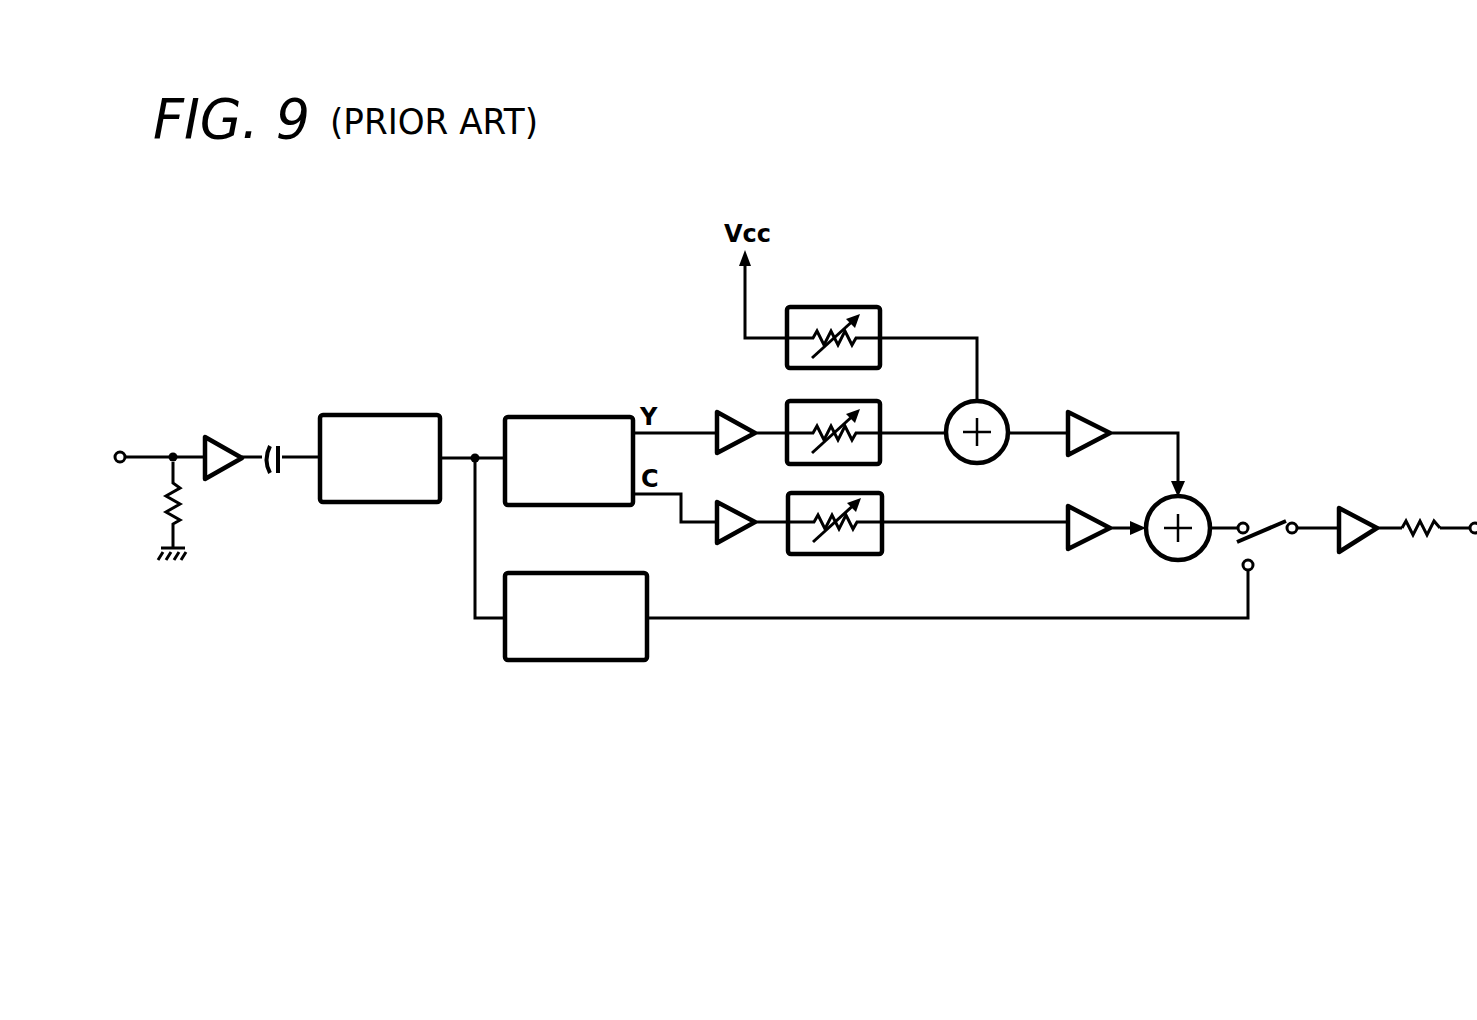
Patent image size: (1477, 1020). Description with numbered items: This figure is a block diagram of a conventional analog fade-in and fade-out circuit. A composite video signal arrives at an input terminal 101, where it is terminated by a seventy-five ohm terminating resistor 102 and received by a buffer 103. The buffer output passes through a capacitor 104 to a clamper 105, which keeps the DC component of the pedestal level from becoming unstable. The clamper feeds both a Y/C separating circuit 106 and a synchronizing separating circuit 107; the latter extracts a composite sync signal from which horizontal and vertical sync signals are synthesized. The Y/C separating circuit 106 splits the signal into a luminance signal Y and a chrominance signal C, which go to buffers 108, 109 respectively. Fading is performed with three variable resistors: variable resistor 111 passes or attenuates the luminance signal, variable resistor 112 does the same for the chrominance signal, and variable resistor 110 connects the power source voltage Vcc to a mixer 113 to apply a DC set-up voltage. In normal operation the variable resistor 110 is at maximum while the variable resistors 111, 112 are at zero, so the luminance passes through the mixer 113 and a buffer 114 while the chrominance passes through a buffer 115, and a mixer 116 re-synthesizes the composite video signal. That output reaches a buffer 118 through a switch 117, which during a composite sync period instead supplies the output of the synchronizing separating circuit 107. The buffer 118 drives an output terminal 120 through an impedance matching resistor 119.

The input terminal 101 is at (120, 450).
The terminating resistor 102 is at (168, 506).
The buffer 103 is at (215, 440).
The capacitor 104 is at (273, 478).
The clamper 105 is at (383, 415).
The Y/C separating circuit 106 is at (567, 417).
The synchronizing separating circuit 107 is at (573, 661).
The buffer 108 is at (726, 412).
The buffer 109 is at (731, 545).
The variable resistor 110 is at (836, 307).
The variable resistor 111 is at (878, 400).
The variable resistor 112 is at (838, 556).
The mixer 113 is at (990, 403).
The buffer 114 is at (1088, 411).
The buffer 115 is at (1090, 548).
The mixer 116 is at (1200, 500).
The switch 117 is at (1271, 523).
The buffer 118 is at (1355, 551).
The impedance matching resistor 119 is at (1422, 505).
The output terminal 120 is at (1474, 535).